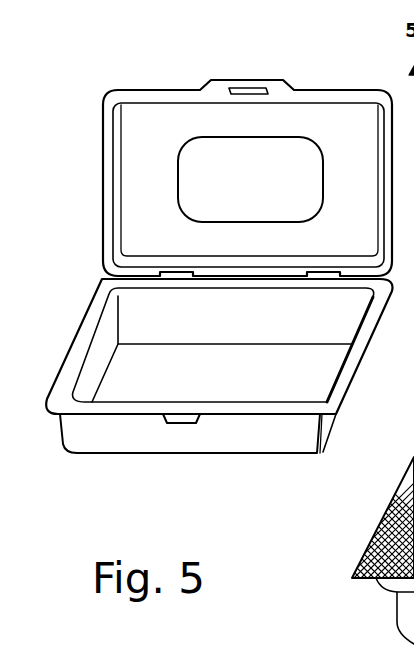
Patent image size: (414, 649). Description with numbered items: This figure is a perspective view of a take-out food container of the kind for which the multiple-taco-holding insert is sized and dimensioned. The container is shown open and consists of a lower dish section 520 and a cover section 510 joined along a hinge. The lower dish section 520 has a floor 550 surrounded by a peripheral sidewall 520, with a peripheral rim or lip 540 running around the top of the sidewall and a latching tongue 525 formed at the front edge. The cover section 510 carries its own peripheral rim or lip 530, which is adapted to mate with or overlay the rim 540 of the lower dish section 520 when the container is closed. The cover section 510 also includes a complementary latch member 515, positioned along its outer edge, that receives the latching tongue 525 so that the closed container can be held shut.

The cover section 510 is at (160, 88).
The complementary latch member 515 is at (265, 81).
The peripheral rim or lip 530 is at (105, 205).
The peripheral rim or lip 540 is at (85, 342).
The floor 550 is at (222, 349).
The lower dish section 520 is at (102, 455).
The latching tongue 525 is at (187, 423).